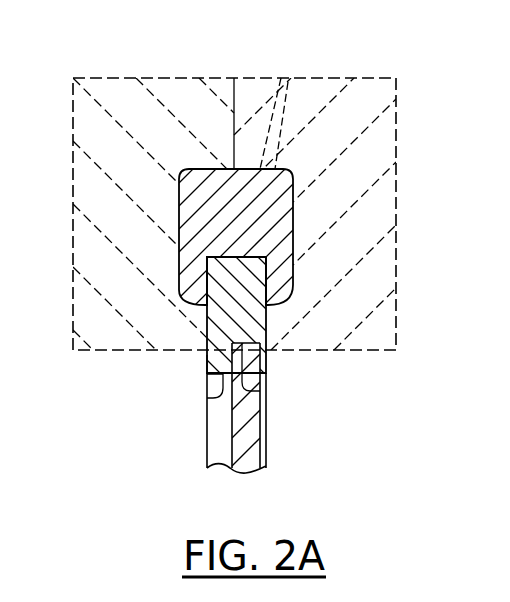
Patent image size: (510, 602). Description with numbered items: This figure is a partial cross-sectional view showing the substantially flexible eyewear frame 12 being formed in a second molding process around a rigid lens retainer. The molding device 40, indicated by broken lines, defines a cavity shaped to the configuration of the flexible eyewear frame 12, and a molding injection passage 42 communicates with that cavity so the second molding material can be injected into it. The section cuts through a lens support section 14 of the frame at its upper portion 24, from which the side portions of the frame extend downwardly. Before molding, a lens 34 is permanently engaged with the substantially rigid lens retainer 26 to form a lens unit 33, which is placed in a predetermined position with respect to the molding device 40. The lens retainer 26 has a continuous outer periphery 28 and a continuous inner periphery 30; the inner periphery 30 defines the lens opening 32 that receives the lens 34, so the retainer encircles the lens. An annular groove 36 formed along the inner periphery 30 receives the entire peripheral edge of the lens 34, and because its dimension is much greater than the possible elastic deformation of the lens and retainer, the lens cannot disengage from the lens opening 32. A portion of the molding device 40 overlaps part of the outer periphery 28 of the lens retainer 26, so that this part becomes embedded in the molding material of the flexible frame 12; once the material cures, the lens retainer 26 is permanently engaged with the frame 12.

The substantially flexible eyewear frame 12 is at (178, 197).
The lens support section 14 is at (215, 169).
The upper portion 24 is at (292, 280).
The substantially rigid lens retainer 26 is at (207, 360).
The continuous outer periphery 28 is at (222, 257).
The continuous inner periphery 30 is at (207, 400).
The lens opening 32 is at (218, 437).
The lens unit 33 is at (264, 420).
The lens 34 is at (243, 427).
The annular groove 36 is at (262, 391).
The molding device 40 is at (397, 138).
The molding injection passage 42 is at (281, 78).